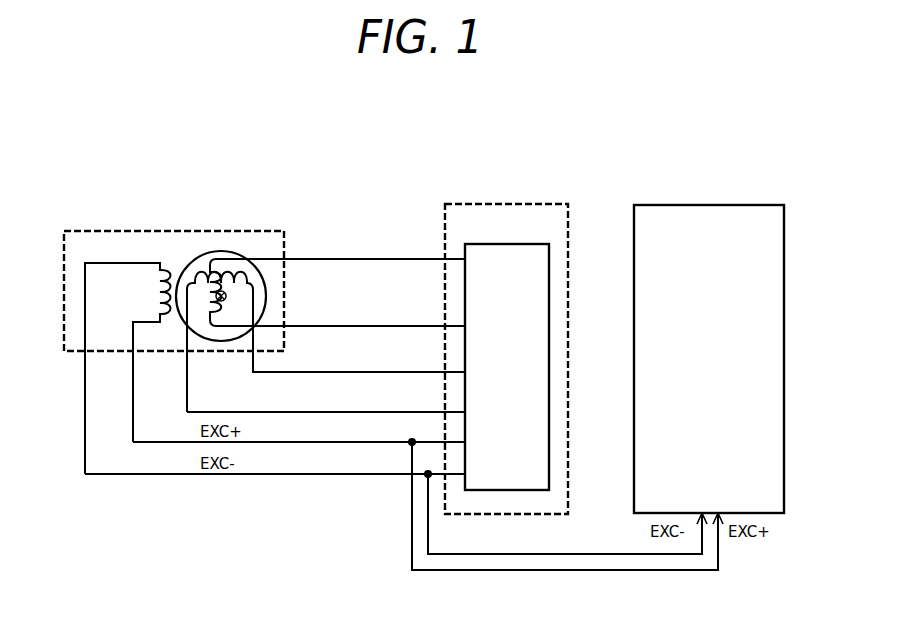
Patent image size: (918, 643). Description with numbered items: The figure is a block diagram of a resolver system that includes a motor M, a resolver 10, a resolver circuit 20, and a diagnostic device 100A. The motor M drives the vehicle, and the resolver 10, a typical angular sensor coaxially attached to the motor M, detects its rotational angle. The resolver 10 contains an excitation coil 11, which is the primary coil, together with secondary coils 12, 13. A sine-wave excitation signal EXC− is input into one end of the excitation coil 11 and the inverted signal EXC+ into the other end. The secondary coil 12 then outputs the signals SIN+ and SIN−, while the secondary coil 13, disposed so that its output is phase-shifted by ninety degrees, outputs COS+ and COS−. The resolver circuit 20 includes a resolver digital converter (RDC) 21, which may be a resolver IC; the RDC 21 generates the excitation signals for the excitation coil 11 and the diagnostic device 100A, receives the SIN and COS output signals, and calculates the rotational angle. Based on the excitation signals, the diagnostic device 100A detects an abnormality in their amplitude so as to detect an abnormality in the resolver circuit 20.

The resolver 10 is at (122, 231).
The excitation coil 11 is at (153, 300).
The secondary coil 12 is at (253, 285).
The secondary coil 13 is at (212, 262).
The motor M is at (227, 252).
The resolver circuit 20 is at (548, 204).
The resolver digital converter (RDC) 21 is at (549, 462).
The diagnostic device 100A is at (725, 205).